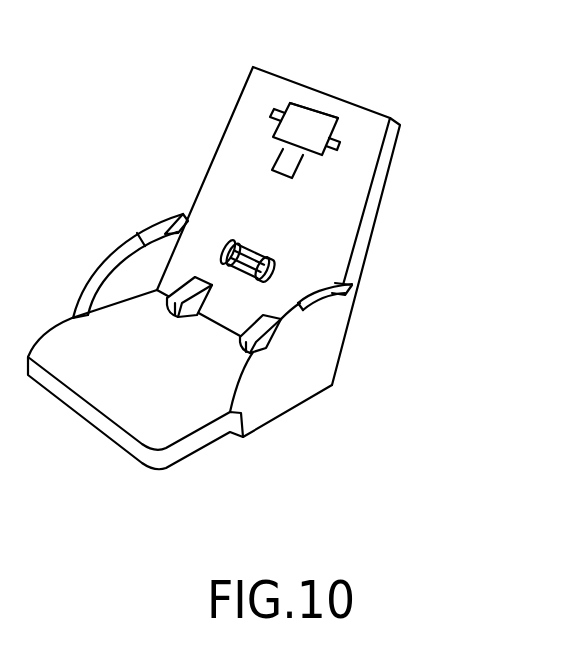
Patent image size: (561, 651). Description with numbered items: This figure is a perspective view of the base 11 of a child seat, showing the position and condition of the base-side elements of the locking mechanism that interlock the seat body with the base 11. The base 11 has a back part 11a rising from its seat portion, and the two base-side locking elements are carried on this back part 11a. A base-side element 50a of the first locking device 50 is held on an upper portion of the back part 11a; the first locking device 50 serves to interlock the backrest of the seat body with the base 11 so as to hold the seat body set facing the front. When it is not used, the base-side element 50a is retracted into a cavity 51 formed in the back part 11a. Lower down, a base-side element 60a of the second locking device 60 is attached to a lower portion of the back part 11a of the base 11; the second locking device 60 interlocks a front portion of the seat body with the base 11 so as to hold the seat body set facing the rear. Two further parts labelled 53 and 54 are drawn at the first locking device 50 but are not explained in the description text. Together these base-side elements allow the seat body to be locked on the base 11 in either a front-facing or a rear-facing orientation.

The base 11 is at (256, 268).
The back part 11a is at (353, 188).
The first locking device 50 is at (306, 97).
The base-side element 50a is at (310, 128).
The cavity 51 is at (300, 108).
The side tab 53 is at (318, 147).
The lower tab 54 is at (282, 160).
The second locking device 60 is at (220, 210).
The base-side element 60a is at (258, 255).